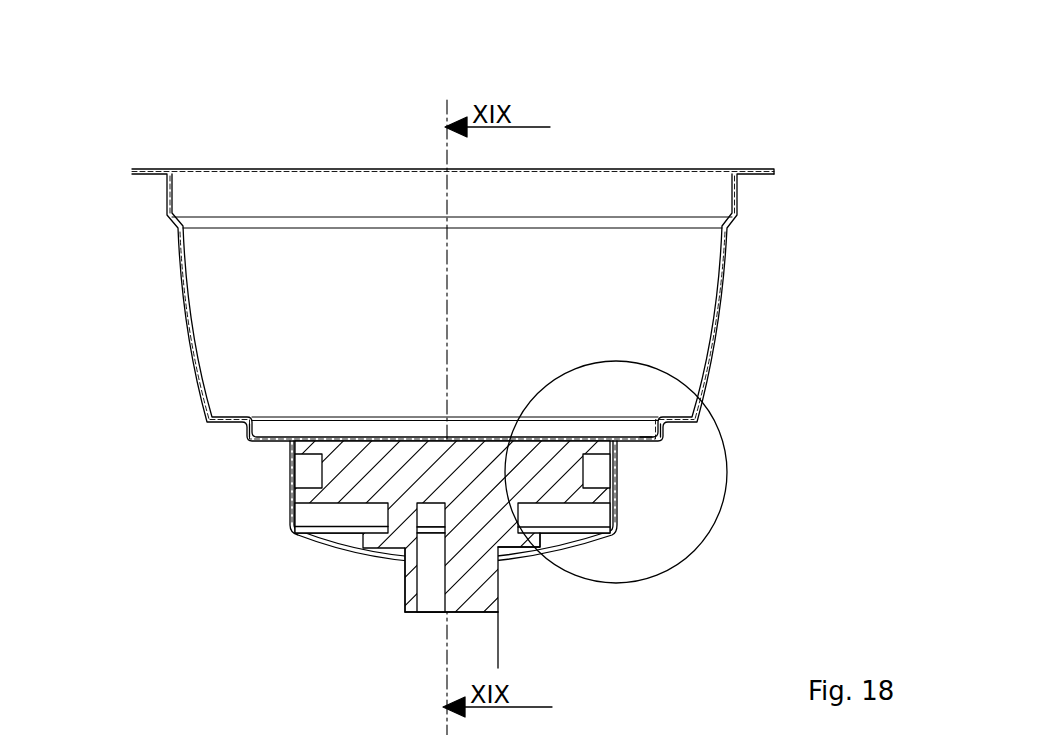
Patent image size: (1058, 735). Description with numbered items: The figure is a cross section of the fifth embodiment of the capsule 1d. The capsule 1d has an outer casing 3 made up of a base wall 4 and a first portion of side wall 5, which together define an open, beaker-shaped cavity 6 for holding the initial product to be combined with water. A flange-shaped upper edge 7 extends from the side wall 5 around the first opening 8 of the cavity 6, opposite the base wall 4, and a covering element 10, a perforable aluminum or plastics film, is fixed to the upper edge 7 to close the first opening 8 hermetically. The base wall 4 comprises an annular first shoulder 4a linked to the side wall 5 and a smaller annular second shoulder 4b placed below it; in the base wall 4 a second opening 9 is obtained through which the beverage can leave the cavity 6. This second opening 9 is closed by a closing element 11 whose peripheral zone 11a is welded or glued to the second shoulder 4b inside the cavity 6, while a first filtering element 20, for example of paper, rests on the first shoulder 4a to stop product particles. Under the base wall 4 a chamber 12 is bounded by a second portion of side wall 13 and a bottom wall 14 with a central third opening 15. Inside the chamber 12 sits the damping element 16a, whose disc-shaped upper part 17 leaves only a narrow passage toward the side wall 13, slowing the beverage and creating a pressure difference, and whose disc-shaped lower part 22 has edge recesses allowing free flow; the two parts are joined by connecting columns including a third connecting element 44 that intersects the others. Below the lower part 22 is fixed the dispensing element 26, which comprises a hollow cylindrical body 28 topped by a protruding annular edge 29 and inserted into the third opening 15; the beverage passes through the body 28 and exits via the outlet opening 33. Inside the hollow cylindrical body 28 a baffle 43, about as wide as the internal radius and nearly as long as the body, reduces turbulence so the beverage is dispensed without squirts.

The capsule 1d is at (602, 112).
The outer casing 3 is at (245, 350).
The base wall 4 is at (232, 455).
The annular first shoulder 4a is at (665, 427).
The annular second shoulder 4b is at (628, 440).
The first portion of side wall 5 is at (190, 333).
The cavity 6 is at (403, 253).
The flange-shaped upper edge 7 is at (757, 178).
The first opening 8 is at (175, 172).
The second opening 9 is at (287, 440).
The covering element 10 is at (658, 170).
The closing element 11 is at (483, 560).
The peripheral zone of closing element 11a is at (272, 444).
The chamber 12 is at (307, 515).
The second portion of side wall 13 is at (289, 470).
The bottom wall 14 is at (537, 505).
The third opening 15 is at (380, 606).
The damping element 16a is at (322, 527).
The upper part 17 is at (632, 445).
The first filtering element 20 is at (630, 420).
The lower part 22 is at (467, 582).
The dispensing element 26 is at (403, 582).
The hollow cylindrical body 28 is at (415, 612).
The annular edge 29 is at (363, 553).
The outlet opening 33 is at (428, 614).
The baffle 43 is at (413, 442).
The third connecting element 44 is at (545, 468).